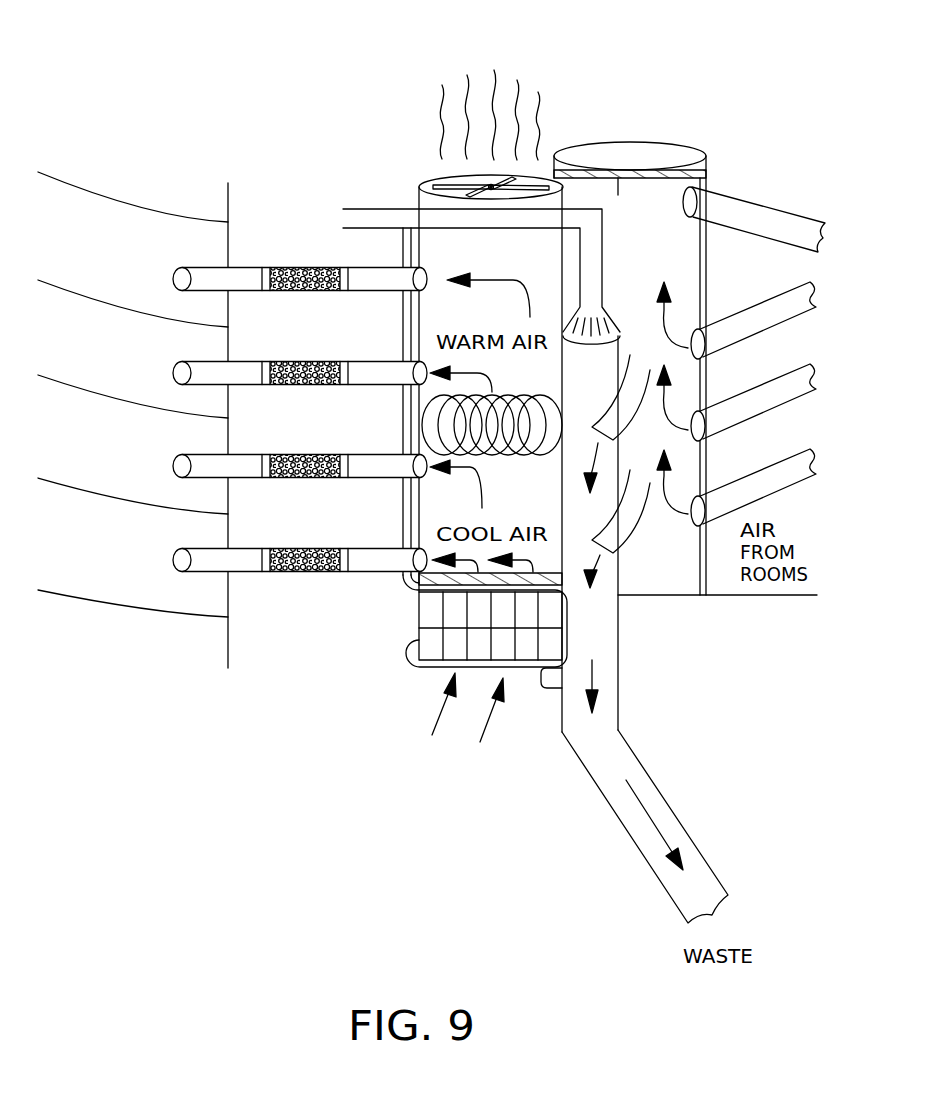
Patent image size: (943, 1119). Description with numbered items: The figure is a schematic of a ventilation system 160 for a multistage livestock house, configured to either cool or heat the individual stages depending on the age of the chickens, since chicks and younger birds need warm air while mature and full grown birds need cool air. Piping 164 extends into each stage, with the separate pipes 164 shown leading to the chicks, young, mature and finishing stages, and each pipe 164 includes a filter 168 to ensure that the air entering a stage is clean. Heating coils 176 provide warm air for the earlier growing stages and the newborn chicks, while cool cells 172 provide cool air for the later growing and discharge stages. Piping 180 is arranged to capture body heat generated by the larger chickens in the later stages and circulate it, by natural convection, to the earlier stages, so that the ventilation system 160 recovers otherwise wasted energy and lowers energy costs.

The ventilation system 160 is at (114, 106).
The piping 164 is at (243, 277).
The filter 168 is at (678, 177).
The cool cells 172 is at (433, 645).
The heating coils 176 is at (505, 452).
The piping 180 is at (757, 393).